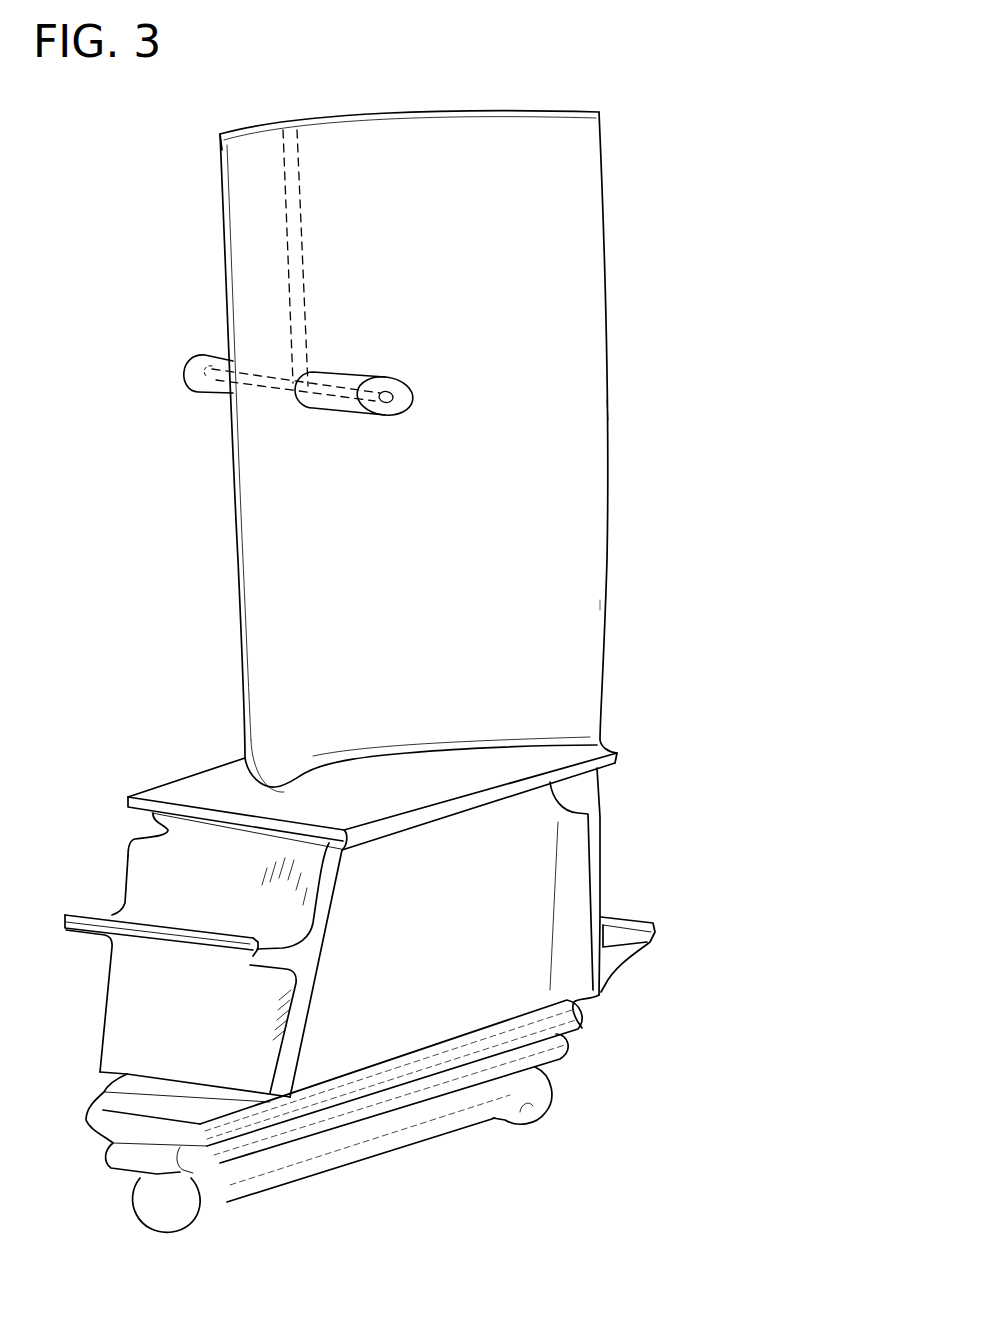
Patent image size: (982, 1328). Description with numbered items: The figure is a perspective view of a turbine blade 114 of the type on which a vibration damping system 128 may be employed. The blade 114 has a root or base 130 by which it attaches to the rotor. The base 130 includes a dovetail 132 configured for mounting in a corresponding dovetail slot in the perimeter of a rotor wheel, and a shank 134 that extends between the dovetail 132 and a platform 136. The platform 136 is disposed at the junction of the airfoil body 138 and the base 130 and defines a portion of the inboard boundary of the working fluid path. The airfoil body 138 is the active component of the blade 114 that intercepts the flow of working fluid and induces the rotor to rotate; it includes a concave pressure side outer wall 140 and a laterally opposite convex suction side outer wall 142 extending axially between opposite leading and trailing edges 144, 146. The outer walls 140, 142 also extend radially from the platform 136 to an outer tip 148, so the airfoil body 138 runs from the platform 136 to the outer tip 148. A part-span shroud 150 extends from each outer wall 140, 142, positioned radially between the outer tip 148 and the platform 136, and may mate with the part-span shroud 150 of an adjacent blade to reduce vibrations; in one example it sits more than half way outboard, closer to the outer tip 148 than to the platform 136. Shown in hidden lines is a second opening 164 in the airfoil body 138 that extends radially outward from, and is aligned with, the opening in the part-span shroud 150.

The blade 114 is at (682, 110).
The vibration damping system 128 is at (200, 170).
The root or base 130 is at (626, 1029).
The dovetail 132 is at (143, 1196).
The shank 134 is at (440, 885).
The platform 136 is at (229, 812).
The airfoil body 138 is at (440, 506).
The pressure side outer wall 140 is at (628, 519).
The suction side outer wall 142 is at (328, 113).
The leading edge 144 is at (236, 477).
The trailing edge 146 is at (606, 445).
The outer tip 148 is at (232, 132).
The part-span shroud 150 is at (215, 356).
The second opening 164 is at (289, 232).